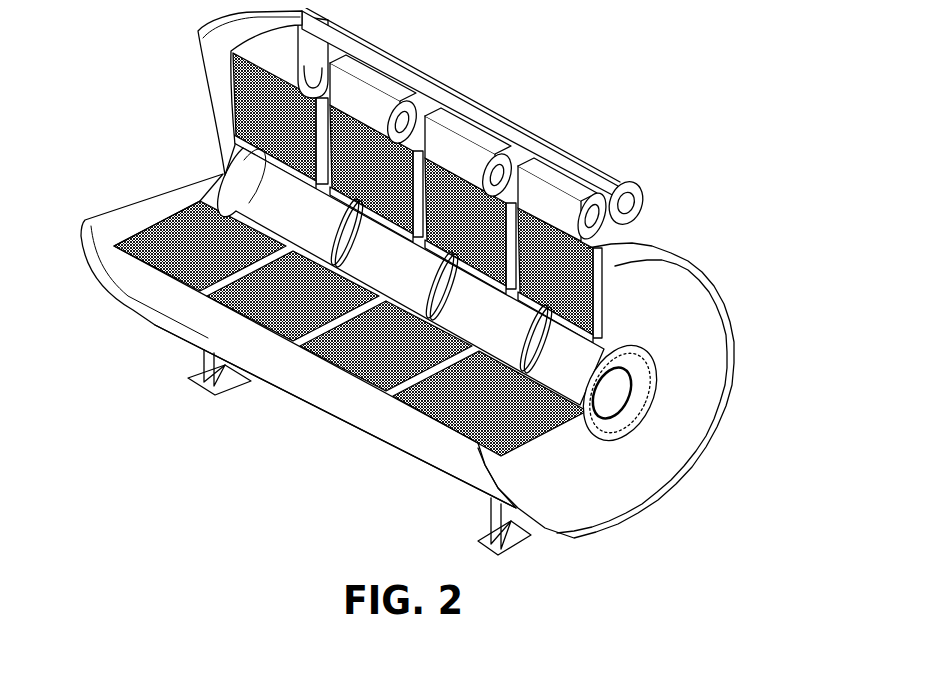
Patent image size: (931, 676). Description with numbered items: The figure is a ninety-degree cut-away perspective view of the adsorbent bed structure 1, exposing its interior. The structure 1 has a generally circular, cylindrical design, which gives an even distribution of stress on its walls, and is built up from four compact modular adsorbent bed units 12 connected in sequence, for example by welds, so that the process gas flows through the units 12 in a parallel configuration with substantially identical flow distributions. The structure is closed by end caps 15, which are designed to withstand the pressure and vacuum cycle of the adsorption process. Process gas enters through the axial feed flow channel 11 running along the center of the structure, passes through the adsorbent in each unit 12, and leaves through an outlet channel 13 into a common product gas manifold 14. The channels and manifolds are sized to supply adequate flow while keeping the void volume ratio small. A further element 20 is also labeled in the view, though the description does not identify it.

The adsorbent bed structure 1 is at (692, 180).
The axial feed flow channel 11 is at (650, 340).
The modular compact adsorbent bed unit 12 is at (440, 490).
The outlet channel 13 is at (603, 187).
The common product gas manifold 14 is at (603, 185).
The end cap 15 is at (97, 206).
The lower shell 20 is at (323, 417).